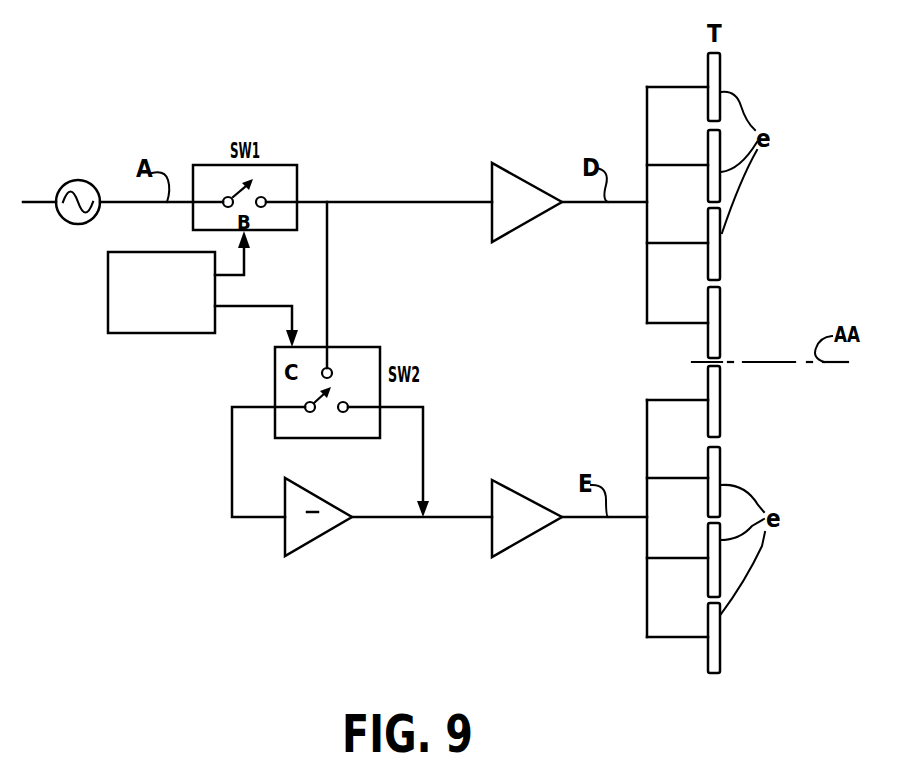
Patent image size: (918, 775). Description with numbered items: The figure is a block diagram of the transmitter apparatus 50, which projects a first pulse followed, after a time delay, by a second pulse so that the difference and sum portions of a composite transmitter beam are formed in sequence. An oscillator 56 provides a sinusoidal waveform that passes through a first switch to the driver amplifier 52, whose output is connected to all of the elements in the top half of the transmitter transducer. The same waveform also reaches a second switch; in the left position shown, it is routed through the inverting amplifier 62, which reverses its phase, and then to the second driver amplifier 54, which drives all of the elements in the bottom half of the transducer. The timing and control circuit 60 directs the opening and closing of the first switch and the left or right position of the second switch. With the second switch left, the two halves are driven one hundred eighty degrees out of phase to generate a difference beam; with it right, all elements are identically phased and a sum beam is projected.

The transmitter apparatus 50 is at (400, 71).
The driver amplifier 52 is at (535, 183).
The second driver amplifier 54 is at (531, 505).
The oscillator 56 is at (87, 180).
The timing and control circuit 60 is at (133, 333).
The inverting amplifier 62 is at (318, 493).